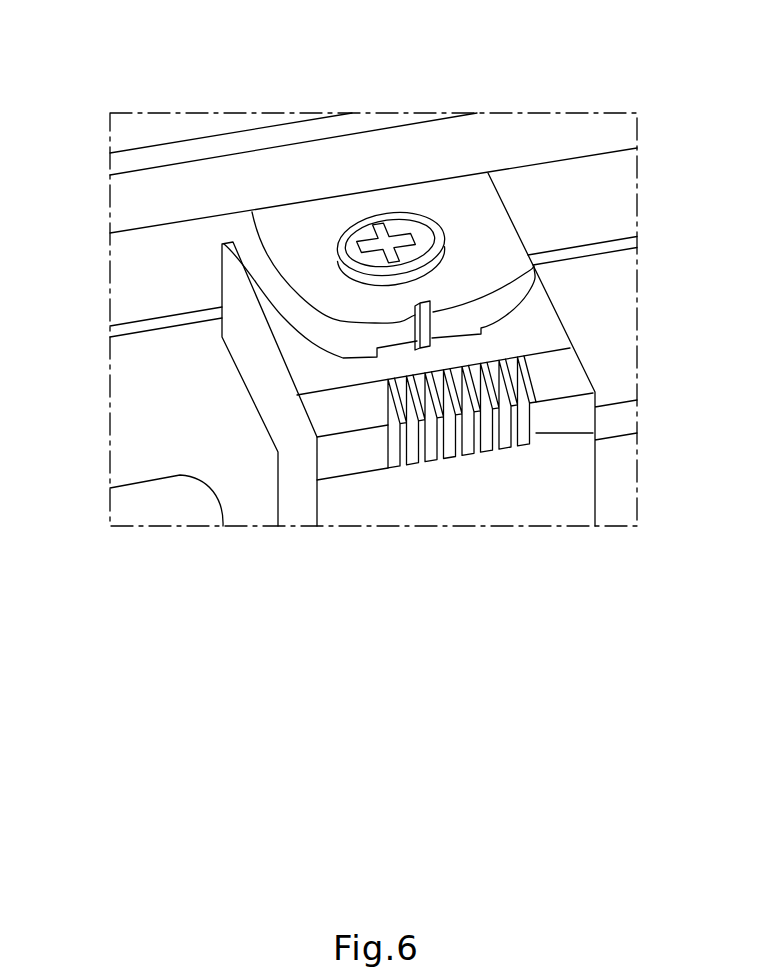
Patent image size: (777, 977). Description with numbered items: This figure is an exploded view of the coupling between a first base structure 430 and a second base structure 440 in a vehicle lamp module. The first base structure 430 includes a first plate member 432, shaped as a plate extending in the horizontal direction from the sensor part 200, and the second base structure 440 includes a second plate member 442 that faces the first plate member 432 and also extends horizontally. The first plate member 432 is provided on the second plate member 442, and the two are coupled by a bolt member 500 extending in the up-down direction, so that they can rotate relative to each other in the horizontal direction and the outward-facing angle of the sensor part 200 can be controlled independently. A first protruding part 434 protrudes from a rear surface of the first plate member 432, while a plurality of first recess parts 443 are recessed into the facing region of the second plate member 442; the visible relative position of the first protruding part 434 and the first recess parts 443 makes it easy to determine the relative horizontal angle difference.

The sensor part 200 is at (180, 155).
The first base structure 430 is at (160, 388).
The first plate member 432 is at (290, 237).
The first protruding part 434 is at (433, 312).
The second base structure 440 is at (357, 505).
The second plate member 442 is at (547, 327).
The first recess part 443 is at (483, 425).
The bolt member 500 is at (360, 232).